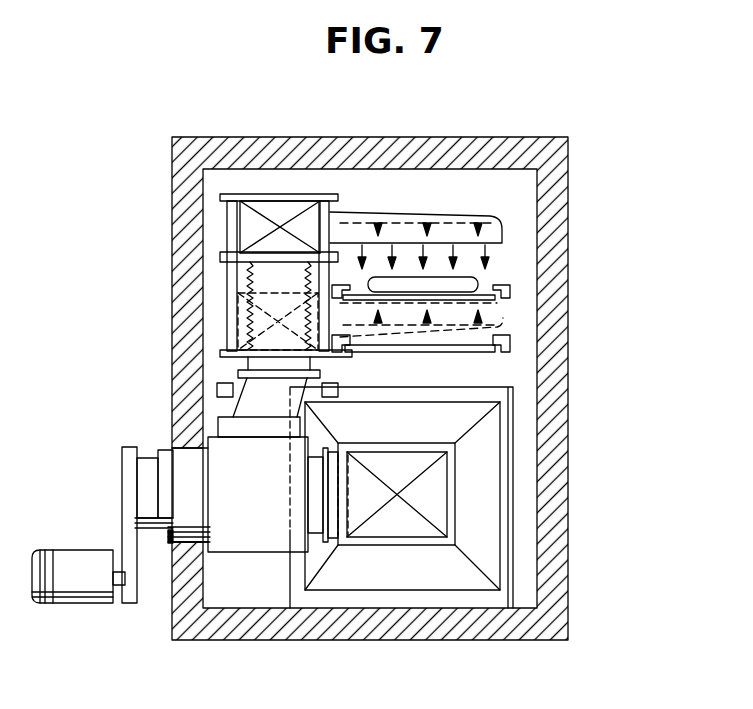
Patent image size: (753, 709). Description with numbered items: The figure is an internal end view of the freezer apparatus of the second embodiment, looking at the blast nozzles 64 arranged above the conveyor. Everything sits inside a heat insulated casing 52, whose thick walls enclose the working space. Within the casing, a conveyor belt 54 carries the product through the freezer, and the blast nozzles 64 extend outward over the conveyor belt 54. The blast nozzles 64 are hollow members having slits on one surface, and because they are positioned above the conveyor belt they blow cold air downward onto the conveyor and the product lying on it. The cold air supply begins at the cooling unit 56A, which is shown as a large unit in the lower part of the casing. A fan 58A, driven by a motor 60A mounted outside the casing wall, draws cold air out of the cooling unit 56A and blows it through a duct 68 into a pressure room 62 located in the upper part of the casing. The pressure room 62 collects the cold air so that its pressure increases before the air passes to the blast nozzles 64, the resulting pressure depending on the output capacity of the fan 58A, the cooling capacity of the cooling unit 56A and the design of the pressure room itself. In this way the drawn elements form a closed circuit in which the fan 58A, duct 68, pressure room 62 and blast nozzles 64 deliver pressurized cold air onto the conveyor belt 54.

The heat insulated casing 52 is at (572, 537).
The conveyor belt 54 is at (493, 300).
The cooling unit 56A is at (477, 473).
The fan 58A is at (192, 552).
The motor 60A is at (72, 548).
The pressure room 62 is at (280, 207).
The blast nozzles 64 is at (398, 212).
The duct 68 is at (228, 452).
The substrate P is at (440, 283).